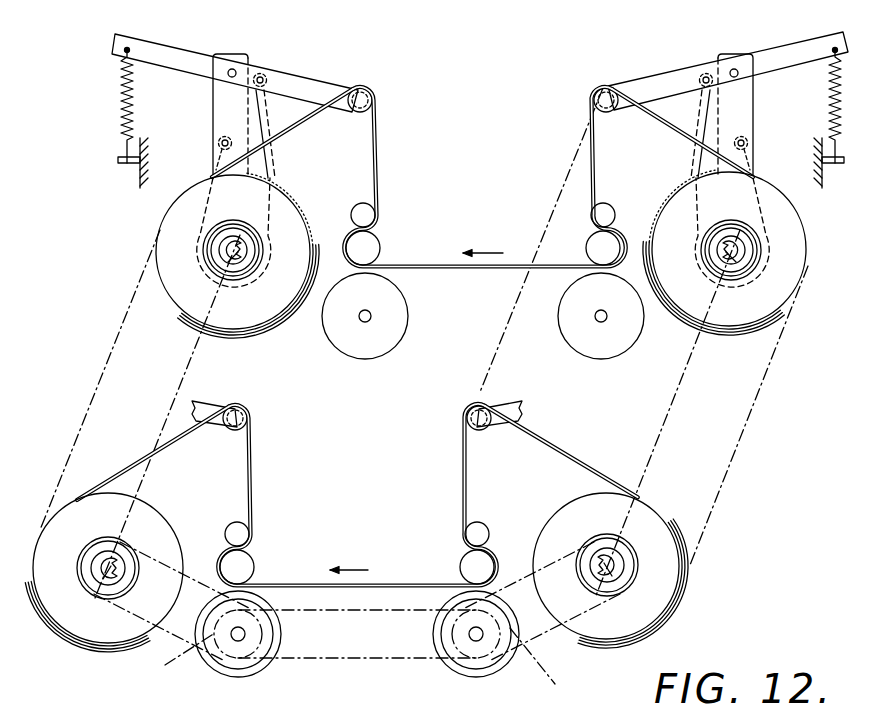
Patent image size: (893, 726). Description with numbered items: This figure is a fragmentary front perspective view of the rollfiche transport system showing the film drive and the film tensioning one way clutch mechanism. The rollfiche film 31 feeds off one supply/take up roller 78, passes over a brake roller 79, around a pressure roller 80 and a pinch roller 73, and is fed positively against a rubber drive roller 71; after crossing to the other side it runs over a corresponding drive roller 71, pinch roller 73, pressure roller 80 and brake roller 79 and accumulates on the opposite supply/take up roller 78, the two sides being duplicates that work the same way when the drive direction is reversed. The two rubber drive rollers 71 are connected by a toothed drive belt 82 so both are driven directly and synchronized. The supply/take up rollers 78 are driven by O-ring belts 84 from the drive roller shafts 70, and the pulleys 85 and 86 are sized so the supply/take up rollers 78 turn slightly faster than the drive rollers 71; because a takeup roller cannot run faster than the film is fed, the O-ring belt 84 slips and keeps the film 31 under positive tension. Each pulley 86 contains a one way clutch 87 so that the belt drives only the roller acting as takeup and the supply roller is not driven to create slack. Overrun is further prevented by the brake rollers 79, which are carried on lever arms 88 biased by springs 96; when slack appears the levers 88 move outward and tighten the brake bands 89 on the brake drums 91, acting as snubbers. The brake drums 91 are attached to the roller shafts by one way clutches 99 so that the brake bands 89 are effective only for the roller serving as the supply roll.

The rollfiche film 31 is at (380, 162).
The drive roller shaft 70 is at (243, 640).
The drive roller 71 is at (406, 336).
The pinch roller 73 is at (382, 242).
The supply/take up roller 78 is at (160, 280).
The brake roller 79 is at (355, 113).
The pressure roller 80 is at (355, 206).
The toothed drive belt 82 is at (352, 659).
The O-ring belt 84 is at (167, 637).
The pulley 85 is at (178, 660).
The pulley 86 is at (130, 592).
The one way clutch 87 is at (97, 553).
The lever arm 88 is at (305, 74).
The brake band 89 is at (273, 163).
The brake drum 91 is at (231, 221).
The spring 96 is at (118, 110).
The one way clutch 99 is at (244, 260).